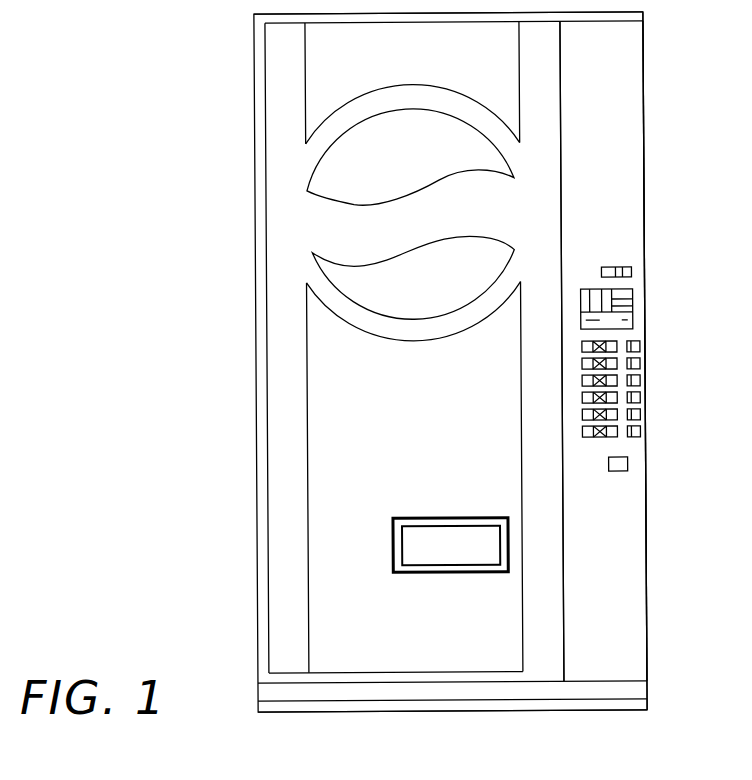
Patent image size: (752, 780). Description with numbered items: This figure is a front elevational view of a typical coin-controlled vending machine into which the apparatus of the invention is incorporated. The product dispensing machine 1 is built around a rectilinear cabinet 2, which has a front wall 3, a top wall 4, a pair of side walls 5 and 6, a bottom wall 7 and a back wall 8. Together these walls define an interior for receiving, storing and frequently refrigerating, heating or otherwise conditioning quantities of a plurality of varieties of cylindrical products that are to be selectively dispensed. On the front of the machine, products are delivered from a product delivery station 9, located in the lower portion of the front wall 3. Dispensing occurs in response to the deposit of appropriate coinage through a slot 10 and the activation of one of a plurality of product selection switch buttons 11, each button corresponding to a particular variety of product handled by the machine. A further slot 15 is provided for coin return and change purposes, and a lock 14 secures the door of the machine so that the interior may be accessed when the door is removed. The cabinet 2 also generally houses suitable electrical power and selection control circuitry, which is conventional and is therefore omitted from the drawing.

The product dispensing machine 1 is at (310, 313).
The cabinet 2 is at (259, 31).
The front wall 3 is at (320, 424).
The top wall 4 is at (645, 14).
The side wall 5 is at (268, 192).
The side wall 6 is at (647, 566).
The bottom wall 7 is at (418, 709).
The back wall 8 is at (622, 92).
The product delivery station 9 is at (407, 547).
The slot 10 is at (583, 318).
The product selection switch buttons 11 is at (583, 432).
The lock 14 is at (632, 273).
The slot 15 is at (627, 461).